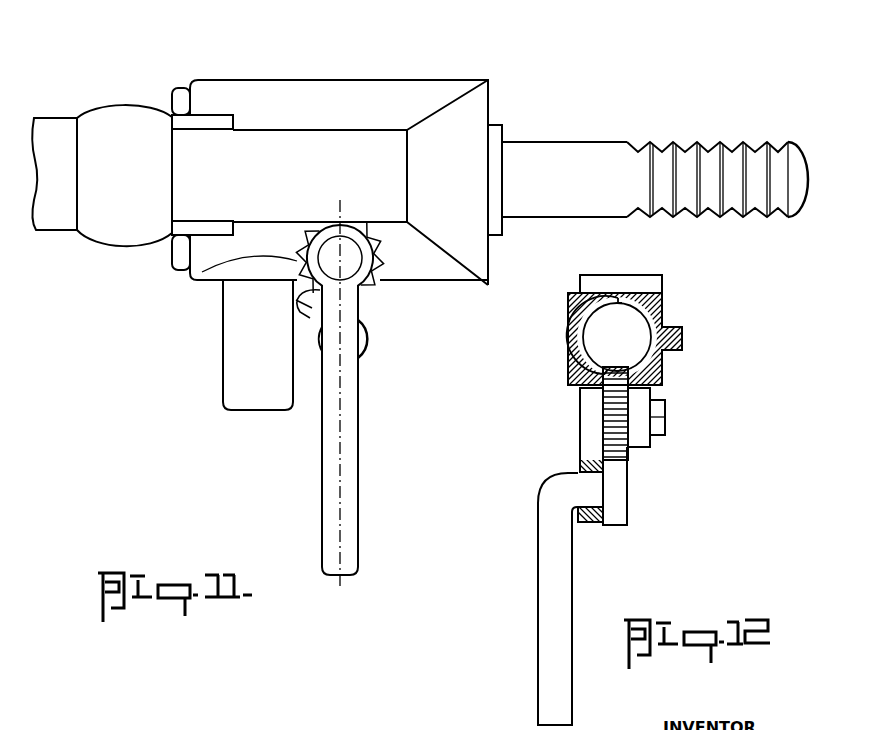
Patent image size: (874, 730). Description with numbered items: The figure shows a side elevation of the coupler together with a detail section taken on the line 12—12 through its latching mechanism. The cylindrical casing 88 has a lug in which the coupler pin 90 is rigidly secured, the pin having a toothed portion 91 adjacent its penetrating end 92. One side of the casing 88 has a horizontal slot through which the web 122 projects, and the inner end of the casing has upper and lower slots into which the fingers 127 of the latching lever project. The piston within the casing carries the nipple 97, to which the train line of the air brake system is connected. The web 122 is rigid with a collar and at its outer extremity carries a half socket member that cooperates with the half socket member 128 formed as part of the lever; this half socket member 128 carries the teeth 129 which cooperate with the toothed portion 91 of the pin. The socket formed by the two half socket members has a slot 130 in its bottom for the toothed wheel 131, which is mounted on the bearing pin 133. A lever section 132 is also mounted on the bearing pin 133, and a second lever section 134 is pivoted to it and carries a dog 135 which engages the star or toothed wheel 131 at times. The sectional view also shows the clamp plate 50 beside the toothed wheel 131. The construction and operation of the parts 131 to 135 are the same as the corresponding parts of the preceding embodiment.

In FIG. 11, the cylindrical casing 88 is at (348, 80).
In FIG. 11, the half socket member 128 is at (347, 125).
In FIG. 12, the half socket member 128 is at (585, 312).
In FIG. 11, the section line 12— 12 is at (336, 393).
In FIG. 11, the fingers 127 is at (182, 90).
In FIG. 11, the coupler pin 90 is at (557, 180).
In FIG. 11, the toothed portion 91 is at (703, 146).
In FIG. 11, the penetrating end 92 is at (790, 156).
In FIG. 11, the toothed wheel 131 is at (380, 286).
In FIG. 12, the toothed wheel 131 is at (617, 388).
In FIG. 11, the lever section 132 is at (343, 310).
In FIG. 12, the lever section 132 is at (590, 440).
In FIG. 11, the dog 135 is at (312, 306).
In FIG. 12, the dog 135 is at (615, 497).
In FIG. 11, the second lever section 134 is at (327, 476).
In FIG. 12, the second lever section 134 is at (545, 611).
In FIG. 11, the nipple 97 is at (235, 367).
In FIG. 12, the web 122 is at (682, 329).
In FIG. 12, the teeth 129 is at (583, 341).
In FIG. 12, the slot 130 is at (663, 371).
In FIG. 12, the clamp plate 50 is at (643, 400).
In FIG. 12, the bearing pin 133 is at (667, 426).